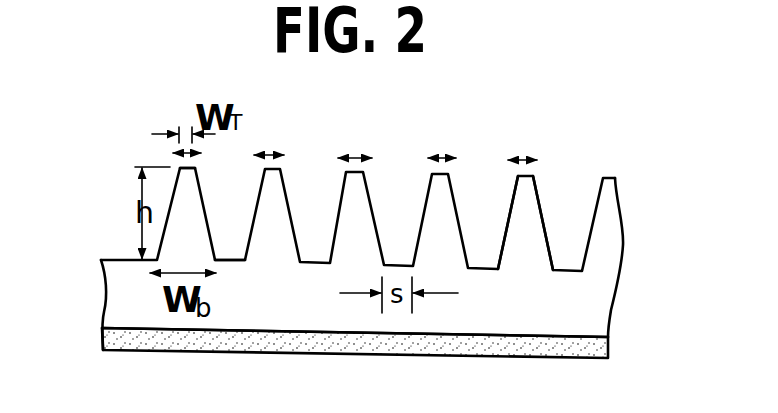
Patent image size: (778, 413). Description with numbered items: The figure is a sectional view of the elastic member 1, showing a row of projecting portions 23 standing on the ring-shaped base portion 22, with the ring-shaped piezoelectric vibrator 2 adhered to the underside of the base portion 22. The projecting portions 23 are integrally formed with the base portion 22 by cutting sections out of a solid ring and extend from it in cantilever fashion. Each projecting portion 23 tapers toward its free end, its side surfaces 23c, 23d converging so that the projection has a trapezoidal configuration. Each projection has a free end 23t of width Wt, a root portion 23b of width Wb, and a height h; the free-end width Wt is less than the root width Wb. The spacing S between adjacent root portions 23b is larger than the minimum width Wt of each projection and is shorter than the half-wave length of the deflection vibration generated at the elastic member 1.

The elastic member 1 is at (481, 146).
The piezoelectric vibrator 2 is at (560, 345).
The base portion 22 is at (485, 317).
The projecting portions 23 is at (190, 225).
The free end 23t is at (188, 166).
The root portion 23b is at (195, 250).
The side surface 23c is at (510, 208).
The side surface 23d is at (545, 225).